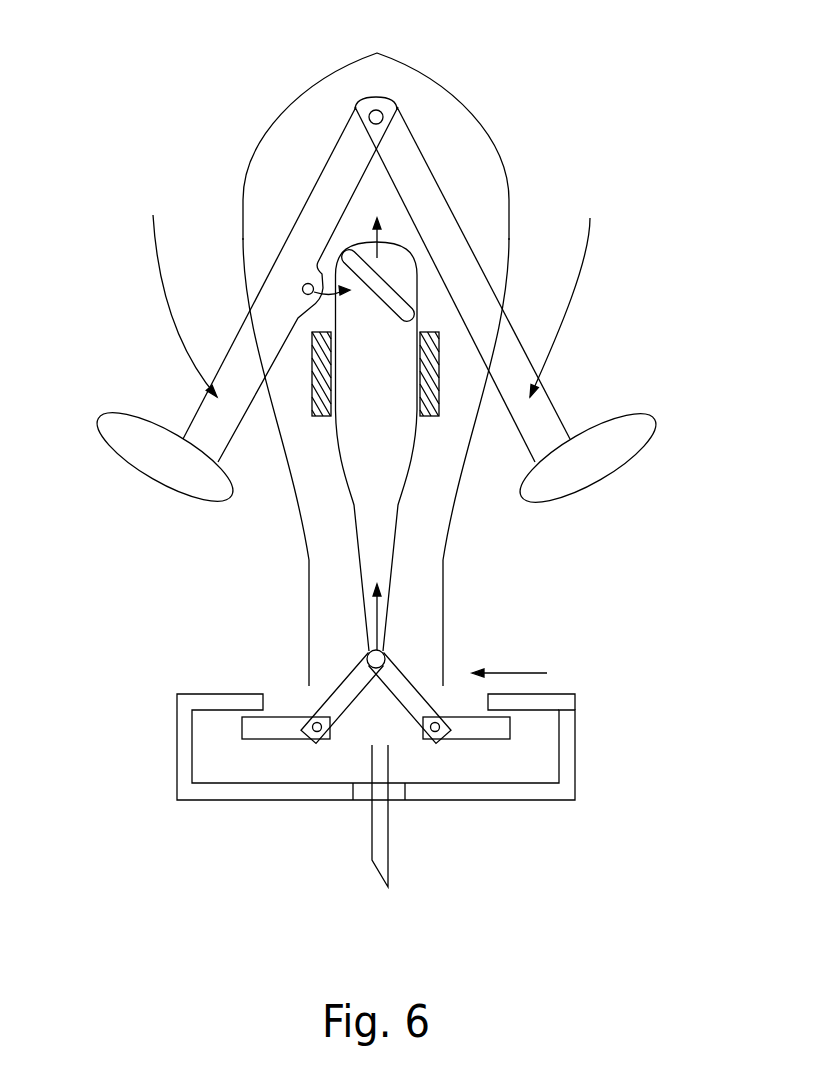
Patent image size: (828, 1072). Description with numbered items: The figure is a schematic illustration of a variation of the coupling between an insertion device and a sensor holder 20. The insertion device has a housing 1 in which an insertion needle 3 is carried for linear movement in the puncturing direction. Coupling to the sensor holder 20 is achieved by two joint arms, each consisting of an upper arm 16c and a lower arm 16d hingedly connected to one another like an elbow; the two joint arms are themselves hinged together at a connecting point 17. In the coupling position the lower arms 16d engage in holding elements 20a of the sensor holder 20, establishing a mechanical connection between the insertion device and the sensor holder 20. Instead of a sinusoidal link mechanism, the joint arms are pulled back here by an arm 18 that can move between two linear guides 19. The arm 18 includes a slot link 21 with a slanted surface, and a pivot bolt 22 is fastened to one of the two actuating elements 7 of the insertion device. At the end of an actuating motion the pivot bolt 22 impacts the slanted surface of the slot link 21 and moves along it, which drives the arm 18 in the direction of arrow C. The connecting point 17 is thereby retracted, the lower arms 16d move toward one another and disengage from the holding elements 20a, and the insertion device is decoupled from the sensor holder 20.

The housing 1 is at (458, 116).
The insertion needle 3 is at (372, 862).
The actuating element 7 is at (142, 477).
The upper arm 16c is at (423, 692).
The lower arm 16d is at (270, 740).
The connecting point 17 is at (388, 642).
The arm 18 is at (377, 467).
The linear guide 19 is at (440, 334).
The sensor holder 20 is at (533, 800).
The holding element 20a is at (549, 695).
The slot link 21 is at (378, 280).
The pivot bolt 22 is at (302, 288).